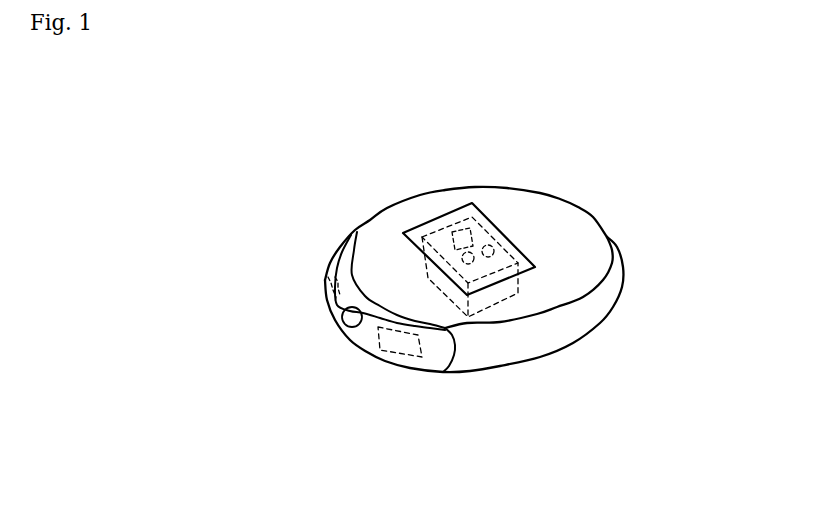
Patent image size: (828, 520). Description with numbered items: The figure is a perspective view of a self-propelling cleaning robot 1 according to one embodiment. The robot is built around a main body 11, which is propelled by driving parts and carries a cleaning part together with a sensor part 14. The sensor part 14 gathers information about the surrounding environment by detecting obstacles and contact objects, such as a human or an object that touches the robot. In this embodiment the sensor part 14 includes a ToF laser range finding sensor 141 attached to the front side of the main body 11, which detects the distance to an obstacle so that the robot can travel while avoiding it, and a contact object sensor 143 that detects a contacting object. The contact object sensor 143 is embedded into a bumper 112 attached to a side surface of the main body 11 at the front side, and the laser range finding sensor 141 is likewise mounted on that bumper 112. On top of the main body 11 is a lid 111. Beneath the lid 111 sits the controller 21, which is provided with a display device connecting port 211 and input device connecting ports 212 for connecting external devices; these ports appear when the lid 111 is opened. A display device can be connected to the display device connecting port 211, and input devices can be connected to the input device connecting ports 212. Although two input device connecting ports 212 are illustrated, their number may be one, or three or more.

The self-propelling cleaning robot 1 is at (597, 172).
The main body 11 is at (381, 236).
The lid 111 is at (535, 268).
The bumper 112 is at (440, 362).
The sensor part 14 is at (328, 366).
The ToF laser range finding sensor 141 is at (344, 324).
The contact object sensor 143 is at (323, 305).
The controller 21 is at (500, 303).
The display device connecting port 211 is at (445, 208).
The input device connecting port 212 is at (492, 240).